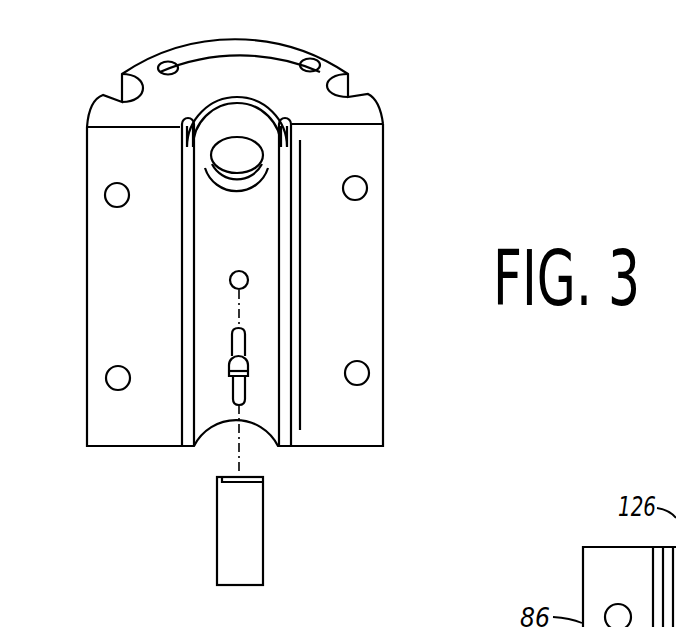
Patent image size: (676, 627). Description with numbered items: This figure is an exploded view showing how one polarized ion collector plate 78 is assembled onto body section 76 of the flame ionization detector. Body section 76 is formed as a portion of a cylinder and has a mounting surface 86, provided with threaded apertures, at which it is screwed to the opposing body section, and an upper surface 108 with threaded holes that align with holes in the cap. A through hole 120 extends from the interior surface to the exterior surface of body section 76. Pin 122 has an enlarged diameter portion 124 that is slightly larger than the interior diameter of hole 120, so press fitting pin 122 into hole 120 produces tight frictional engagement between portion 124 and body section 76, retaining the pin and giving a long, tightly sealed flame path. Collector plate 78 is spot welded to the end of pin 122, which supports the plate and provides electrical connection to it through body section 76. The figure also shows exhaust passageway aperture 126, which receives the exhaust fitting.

The body section 76 is at (390, 142).
The ion collector plate 78 is at (247, 490).
The mounting surface 86 is at (358, 292).
The upper surface 108 is at (363, 110).
The through hole 120 is at (247, 272).
The pin 122 is at (258, 340).
The enlarged diameter portion 124 is at (229, 364).
The exhaust passageway aperture 126 is at (233, 142).